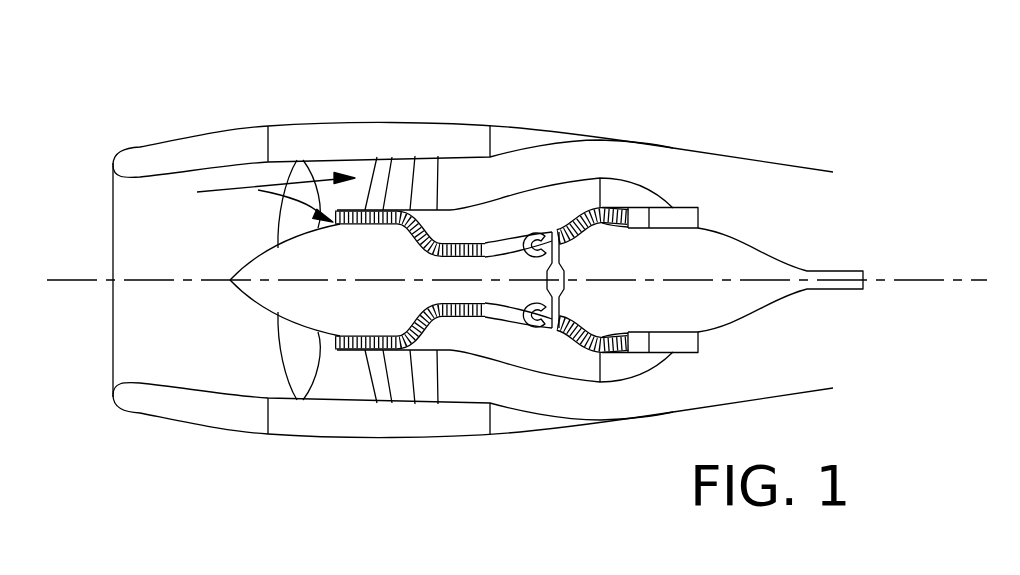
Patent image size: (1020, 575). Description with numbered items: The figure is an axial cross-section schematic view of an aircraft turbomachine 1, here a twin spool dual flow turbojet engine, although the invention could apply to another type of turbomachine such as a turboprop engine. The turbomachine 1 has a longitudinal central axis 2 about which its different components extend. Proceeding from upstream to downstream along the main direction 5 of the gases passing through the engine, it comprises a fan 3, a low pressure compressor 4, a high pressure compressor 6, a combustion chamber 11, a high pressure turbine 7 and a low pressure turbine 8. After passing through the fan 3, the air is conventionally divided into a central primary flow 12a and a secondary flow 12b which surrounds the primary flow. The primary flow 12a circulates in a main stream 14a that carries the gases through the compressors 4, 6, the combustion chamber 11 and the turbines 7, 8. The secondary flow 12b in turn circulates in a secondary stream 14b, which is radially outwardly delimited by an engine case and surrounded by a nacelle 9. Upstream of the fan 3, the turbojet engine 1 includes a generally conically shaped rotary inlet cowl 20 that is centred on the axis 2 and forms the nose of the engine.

The aircraft turbomachine 1 is at (265, 83).
The longitudinal central axis 2 is at (58, 280).
The fan 3 is at (292, 350).
The low pressure compressor 4 is at (360, 210).
The main direction of gases 5 is at (768, 75).
The high pressure compressor 6 is at (470, 236).
The high pressure turbine 7 is at (568, 206).
The low pressure turbine 8 is at (628, 192).
The nacelle 9 is at (388, 137).
The combustion chamber 11 is at (530, 234).
The primary flow 12a is at (407, 158).
The secondary flow 12b is at (297, 160).
The main stream 14a is at (427, 320).
The secondary stream 14b is at (547, 390).
The rotary inlet cowl 20 is at (263, 292).